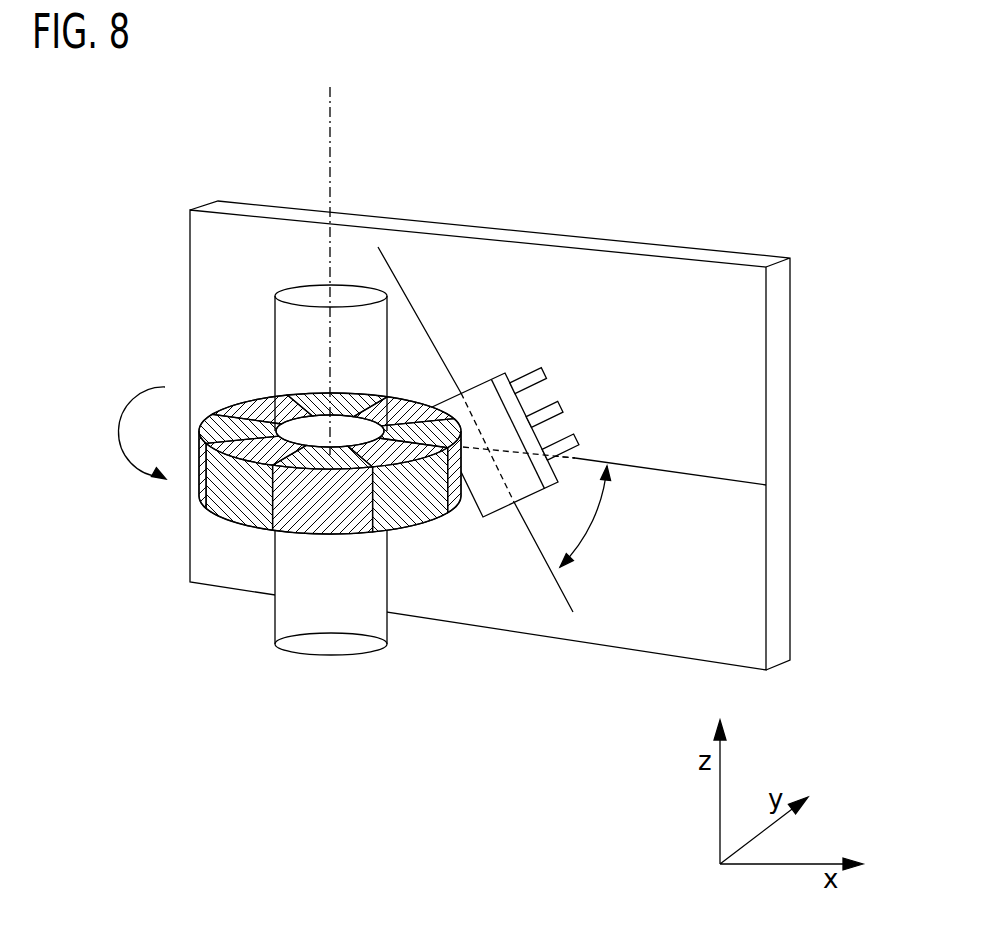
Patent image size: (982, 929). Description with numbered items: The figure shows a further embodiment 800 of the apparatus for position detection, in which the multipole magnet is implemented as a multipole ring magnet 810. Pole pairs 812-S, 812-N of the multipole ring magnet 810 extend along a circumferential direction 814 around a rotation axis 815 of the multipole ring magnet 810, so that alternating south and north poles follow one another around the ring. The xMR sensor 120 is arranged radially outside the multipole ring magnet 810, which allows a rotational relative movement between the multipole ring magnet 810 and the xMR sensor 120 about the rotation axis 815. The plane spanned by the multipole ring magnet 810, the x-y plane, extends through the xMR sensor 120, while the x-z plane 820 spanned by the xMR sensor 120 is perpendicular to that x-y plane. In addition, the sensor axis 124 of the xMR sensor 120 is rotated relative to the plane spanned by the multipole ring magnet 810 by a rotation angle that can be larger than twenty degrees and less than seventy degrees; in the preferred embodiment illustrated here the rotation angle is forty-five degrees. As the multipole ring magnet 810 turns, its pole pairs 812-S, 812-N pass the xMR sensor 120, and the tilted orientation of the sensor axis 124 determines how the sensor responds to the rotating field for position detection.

The further embodiment 800 is at (685, 142).
The multipole ring magnet 810 is at (243, 535).
The north pole of pole pair 812-N is at (420, 507).
The south pole of pole pair 812-S is at (337, 522).
The circumferential direction 814 is at (113, 430).
The rotation axis 815 is at (331, 127).
The x-z plane 820 is at (780, 398).
The xMR sensor 120 is at (478, 400).
The sensor axis 124 is at (572, 605).